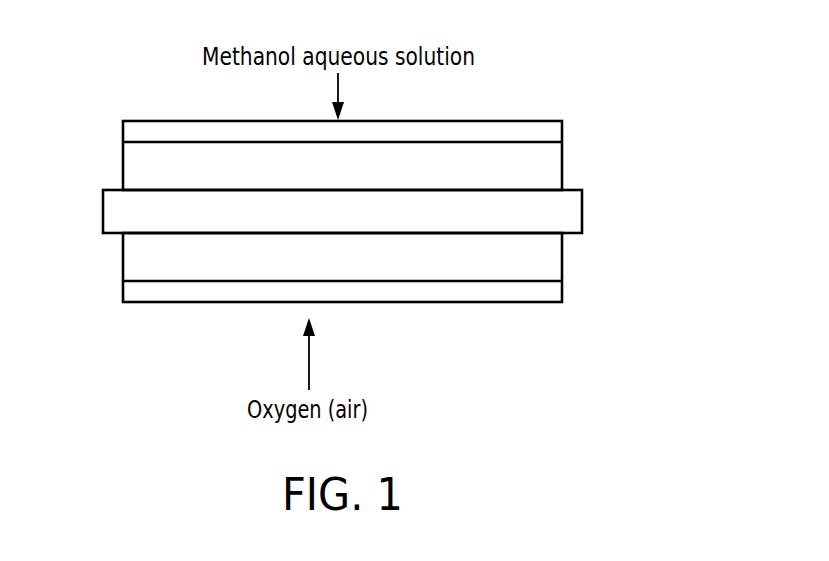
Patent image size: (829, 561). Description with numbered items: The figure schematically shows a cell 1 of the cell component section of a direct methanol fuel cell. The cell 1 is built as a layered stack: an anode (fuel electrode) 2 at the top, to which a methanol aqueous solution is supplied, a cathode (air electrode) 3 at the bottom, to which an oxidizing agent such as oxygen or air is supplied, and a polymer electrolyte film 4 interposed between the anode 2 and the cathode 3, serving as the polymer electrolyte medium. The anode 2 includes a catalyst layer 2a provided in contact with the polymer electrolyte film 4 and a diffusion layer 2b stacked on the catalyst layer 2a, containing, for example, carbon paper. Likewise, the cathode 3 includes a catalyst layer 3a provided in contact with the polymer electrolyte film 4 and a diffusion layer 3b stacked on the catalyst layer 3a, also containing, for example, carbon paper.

The cell 1 is at (304, 215).
The anode 2 is at (122, 63).
The catalyst layer 2a is at (137, 148).
The anode gas diffusion layer 2b is at (163, 128).
The cathode 3 is at (135, 364).
The catalyst layer 3a is at (147, 267).
The cathode gas diffusion layer 3b is at (207, 288).
The polymer electrolyte film 4 is at (103, 205).